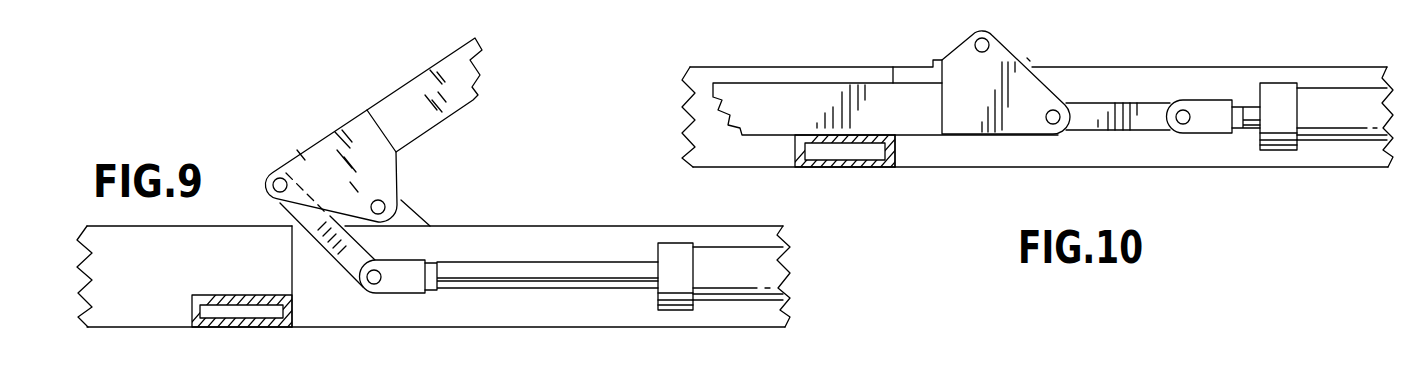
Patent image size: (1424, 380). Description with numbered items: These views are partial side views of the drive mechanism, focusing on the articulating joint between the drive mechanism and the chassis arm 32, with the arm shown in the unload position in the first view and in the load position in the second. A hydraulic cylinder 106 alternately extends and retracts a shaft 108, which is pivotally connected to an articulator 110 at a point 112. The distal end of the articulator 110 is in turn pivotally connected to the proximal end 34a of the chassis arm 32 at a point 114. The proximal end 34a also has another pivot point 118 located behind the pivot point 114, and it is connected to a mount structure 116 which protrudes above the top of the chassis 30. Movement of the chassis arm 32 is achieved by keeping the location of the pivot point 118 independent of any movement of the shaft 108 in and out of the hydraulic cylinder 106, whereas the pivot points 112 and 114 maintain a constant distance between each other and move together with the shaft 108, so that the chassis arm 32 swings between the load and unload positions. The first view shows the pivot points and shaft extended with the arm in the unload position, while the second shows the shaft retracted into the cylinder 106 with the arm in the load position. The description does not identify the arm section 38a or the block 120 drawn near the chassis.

In FIG. 9, the chassis 30 is at (500, 0).
In FIG. 10, the chassis 30 is at (1152, 67).
In FIG. 9, the chassis arm 32 is at (407, 90).
In FIG. 10, the chassis arm 32 is at (813, 93).
In FIG. 9, the proximal end of chassis arm 34a is at (328, 142).
In FIG. 10, the proximal end of chassis arm 34a is at (963, 75).
In FIG. 9, the arm section 38a is at (418, 9).
In FIG. 9, the hydraulic cylinder 106 is at (722, 246).
In FIG. 10, the hydraulic cylinder 106 is at (1337, 148).
In FIG. 9, the shaft 108 is at (603, 277).
In FIG. 10, the shaft 108 is at (1253, 100).
In FIG. 9, the articulator 110 is at (318, 258).
In FIG. 10, the articulator 110 is at (1115, 132).
In FIG. 9, the pivot point 112 is at (372, 293).
In FIG. 10, the pivot point 112 is at (1177, 133).
In FIG. 9, the pivot point 114 is at (262, 183).
In FIG. 10, the pivot point 114 is at (1043, 132).
In FIG. 9, the mount structure 116 is at (408, 214).
In FIG. 10, the mount structure 116 is at (1027, 58).
In FIG. 9, the pivot point 118 is at (383, 200).
In FIG. 10, the pivot point 118 is at (987, 32).
In FIG. 10, the bearing block 120 is at (870, 168).